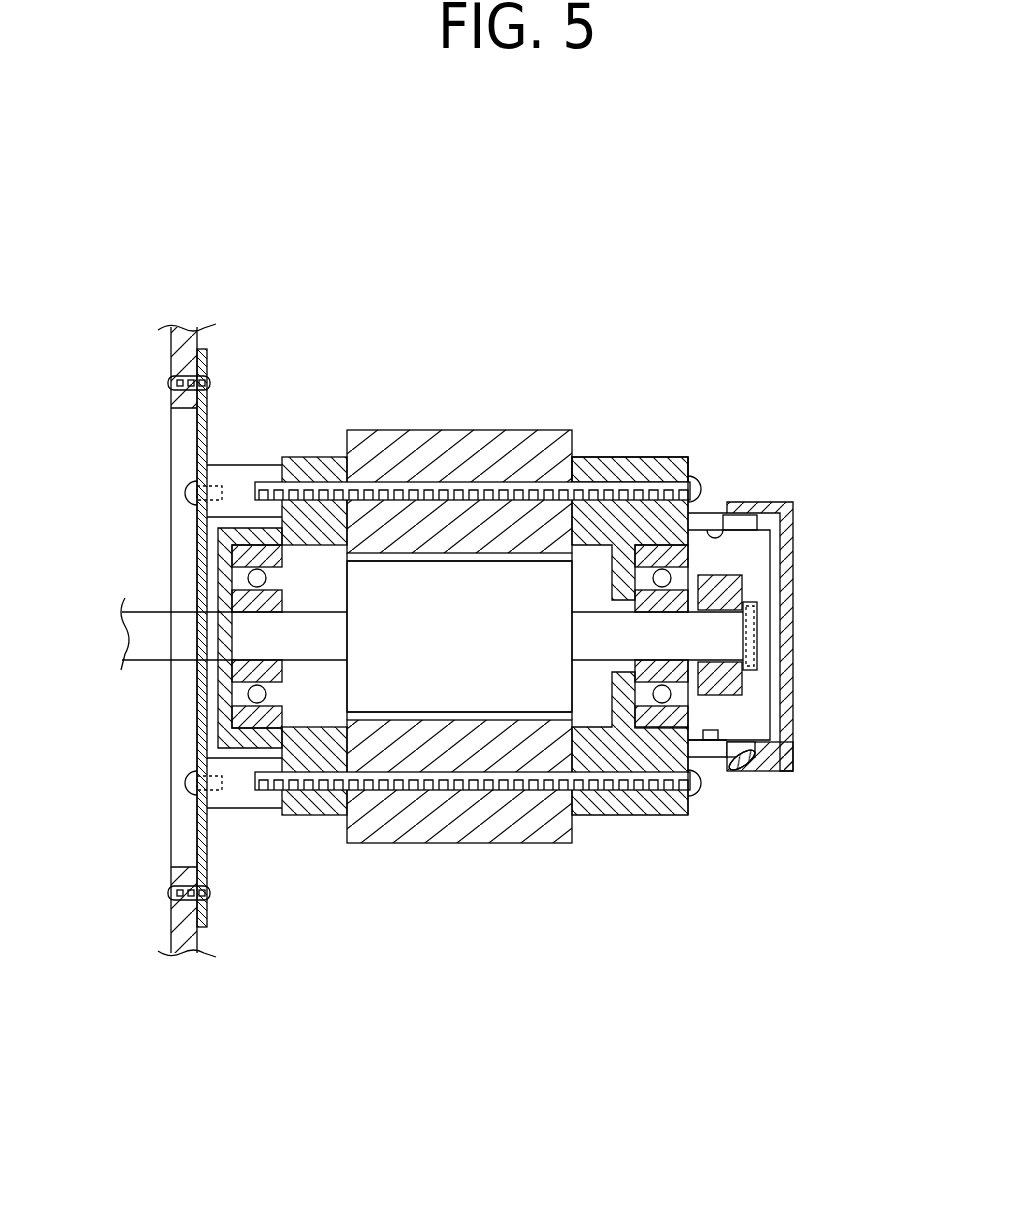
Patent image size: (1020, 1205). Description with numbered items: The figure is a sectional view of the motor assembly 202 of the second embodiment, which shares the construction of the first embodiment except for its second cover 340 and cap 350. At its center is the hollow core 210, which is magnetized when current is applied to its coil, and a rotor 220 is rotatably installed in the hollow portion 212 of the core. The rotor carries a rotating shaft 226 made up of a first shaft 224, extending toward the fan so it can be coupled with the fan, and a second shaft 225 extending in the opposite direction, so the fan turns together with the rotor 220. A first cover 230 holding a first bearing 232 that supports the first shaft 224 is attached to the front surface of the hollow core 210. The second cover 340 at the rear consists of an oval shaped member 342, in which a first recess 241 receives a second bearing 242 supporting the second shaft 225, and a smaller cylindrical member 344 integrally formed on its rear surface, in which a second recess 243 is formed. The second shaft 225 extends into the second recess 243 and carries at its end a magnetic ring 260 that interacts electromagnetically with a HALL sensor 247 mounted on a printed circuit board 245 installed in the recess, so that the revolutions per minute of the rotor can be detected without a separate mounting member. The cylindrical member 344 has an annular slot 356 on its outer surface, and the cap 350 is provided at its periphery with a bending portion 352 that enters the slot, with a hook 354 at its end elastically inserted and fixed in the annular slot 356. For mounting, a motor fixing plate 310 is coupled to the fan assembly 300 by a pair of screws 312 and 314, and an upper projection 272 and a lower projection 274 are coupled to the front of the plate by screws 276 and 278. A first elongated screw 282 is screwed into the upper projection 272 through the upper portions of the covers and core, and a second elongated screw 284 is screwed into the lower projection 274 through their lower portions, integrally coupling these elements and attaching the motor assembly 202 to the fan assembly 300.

The motor assembly 202 is at (453, 877).
The hollow core 210 is at (449, 452).
The hollow portion 212 is at (510, 553).
The rotor 220 is at (460, 673).
The first shaft 224 is at (316, 632).
The second shaft 225 is at (597, 643).
The rotating shaft 226 is at (658, 903).
The first cover 230 is at (310, 458).
The first bearing 232 is at (258, 552).
The first recess 241 is at (625, 490).
The second bearing 242 is at (690, 718).
The second recess 243 is at (725, 520).
The printed circuit board 245 is at (757, 583).
The HALL sensor 247 is at (742, 767).
The magnetic ring 260 is at (748, 568).
The upper projection 272 is at (228, 472).
The lower projection 274 is at (240, 797).
The screw 276 is at (186, 491).
The screw 278 is at (186, 784).
The first elongated screw 282 is at (715, 525).
The second elongated screw 284 is at (692, 757).
The fan assembly 300 is at (185, 352).
The motor fixing plate 310 is at (203, 853).
The screw 312 is at (172, 386).
The screw 314 is at (170, 890).
The second cover 340 is at (742, 298).
The oval shaped member 342 is at (647, 470).
The cylindrical member 344 is at (668, 483).
The cap 350 is at (786, 616).
The bending portion 352 is at (793, 763).
The hook 354 is at (778, 768).
The annular slot 356 is at (718, 735).